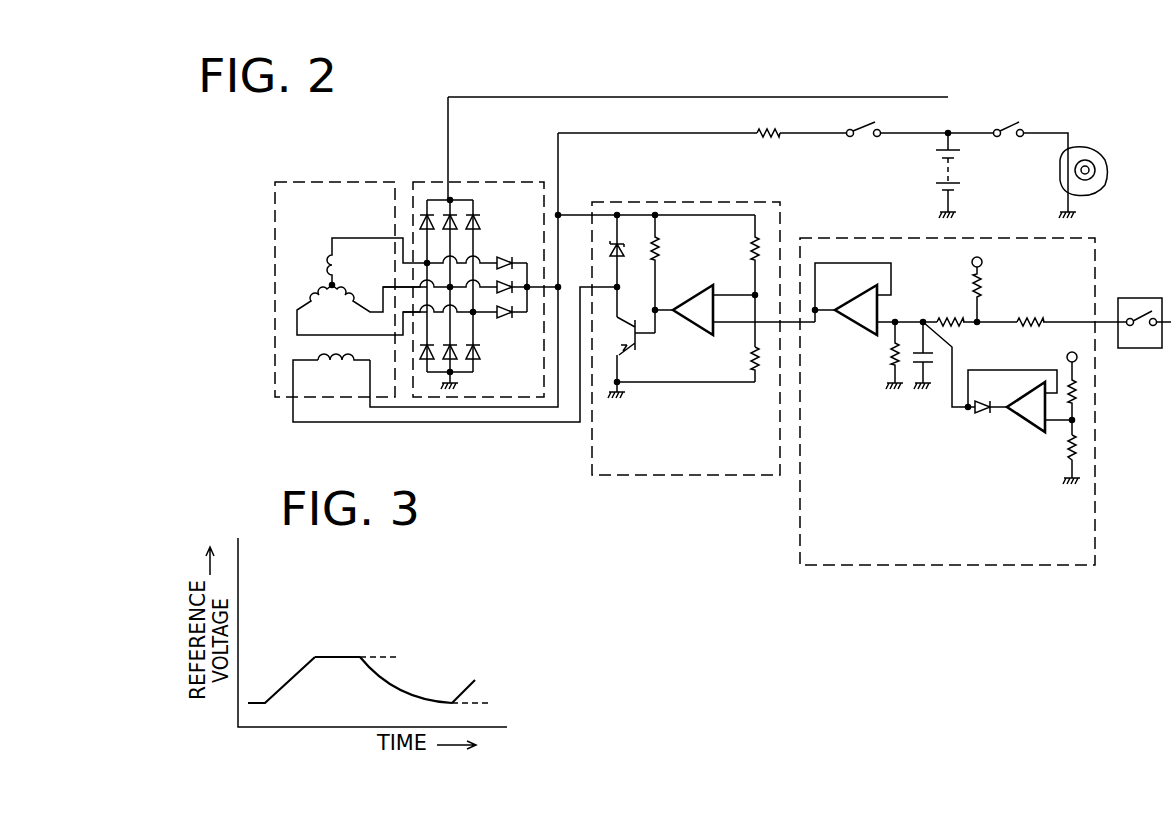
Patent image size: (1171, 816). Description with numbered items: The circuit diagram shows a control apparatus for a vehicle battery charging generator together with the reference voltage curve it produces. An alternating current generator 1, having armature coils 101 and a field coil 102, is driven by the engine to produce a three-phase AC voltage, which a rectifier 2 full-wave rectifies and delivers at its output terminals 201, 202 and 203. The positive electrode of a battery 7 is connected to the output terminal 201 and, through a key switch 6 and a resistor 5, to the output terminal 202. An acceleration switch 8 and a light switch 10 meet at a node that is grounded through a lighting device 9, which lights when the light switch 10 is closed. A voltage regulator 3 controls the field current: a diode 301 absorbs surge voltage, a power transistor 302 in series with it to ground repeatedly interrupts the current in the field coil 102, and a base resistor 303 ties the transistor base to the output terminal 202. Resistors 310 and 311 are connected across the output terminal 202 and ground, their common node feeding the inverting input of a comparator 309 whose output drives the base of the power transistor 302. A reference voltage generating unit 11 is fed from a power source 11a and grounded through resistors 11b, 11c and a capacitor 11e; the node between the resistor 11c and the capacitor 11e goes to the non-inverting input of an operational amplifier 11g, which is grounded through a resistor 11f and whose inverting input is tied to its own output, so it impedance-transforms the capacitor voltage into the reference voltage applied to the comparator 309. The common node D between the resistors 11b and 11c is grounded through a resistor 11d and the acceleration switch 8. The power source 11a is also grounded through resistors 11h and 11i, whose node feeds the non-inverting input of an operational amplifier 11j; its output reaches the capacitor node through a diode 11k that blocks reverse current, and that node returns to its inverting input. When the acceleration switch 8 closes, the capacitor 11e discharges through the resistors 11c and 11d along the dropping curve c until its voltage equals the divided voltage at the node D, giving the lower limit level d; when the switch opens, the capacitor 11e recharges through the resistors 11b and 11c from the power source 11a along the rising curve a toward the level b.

In FIG. 2, the alternating current generator 1 is at (275, 262).
In FIG. 2, the armature coils 101 is at (330, 258).
In FIG. 2, the field coil 102 is at (316, 362).
In FIG. 2, the rectifier 2 is at (418, 182).
In FIG. 2, the output terminal 201 is at (452, 200).
In FIG. 2, the output terminal 202 is at (527, 285).
In FIG. 2, the output terminal 203 is at (458, 374).
In FIG. 2, the voltage regulator 3 is at (596, 477).
In FIG. 2, the diode 301 is at (623, 248).
In FIG. 2, the power transistor 302 is at (626, 356).
In FIG. 2, the base resistor 303 is at (662, 248).
In FIG. 2, the comparator 309 is at (680, 303).
In FIG. 2, the resistor 310 is at (772, 220).
In FIG. 2, the resistor 311 is at (748, 360).
In FIG. 2, the resistor 5 is at (766, 140).
In FIG. 2, the key switch 6 is at (866, 126).
In FIG. 2, the battery 7 is at (940, 150).
In FIG. 2, the acceleration switch 8 is at (1140, 298).
In FIG. 2, the lighting device 9 is at (1105, 155).
In FIG. 2, the light switch 10 is at (1006, 124).
In FIG. 2, the reference voltage generating unit 11 is at (1070, 566).
In FIG. 2, the power source 11a is at (983, 262).
In FIG. 2, the resistor 11b is at (972, 288).
In FIG. 2, the resistor 11c is at (950, 320).
In FIG. 2, the resistor 11d is at (1032, 318).
In FIG. 2, the capacitor 11e is at (921, 362).
In FIG. 2, the resistor 11f is at (892, 352).
In FIG. 2, the operational amplifier 11g is at (853, 333).
In FIG. 2, the resistor 11h is at (1078, 385).
In FIG. 2, the resistor 11i is at (1068, 455).
In FIG. 2, the operational amplifier 11j is at (1020, 423).
In FIG. 2, the diode 11k is at (978, 414).
In FIG. 2, the common node D is at (979, 320).
In FIG. 3, the rising curve a is at (281, 680).
In FIG. 3, the reference voltage level b is at (357, 643).
In FIG. 3, the dropping curve c is at (402, 680).
In FIG. 3, the lower limit level d is at (461, 689).